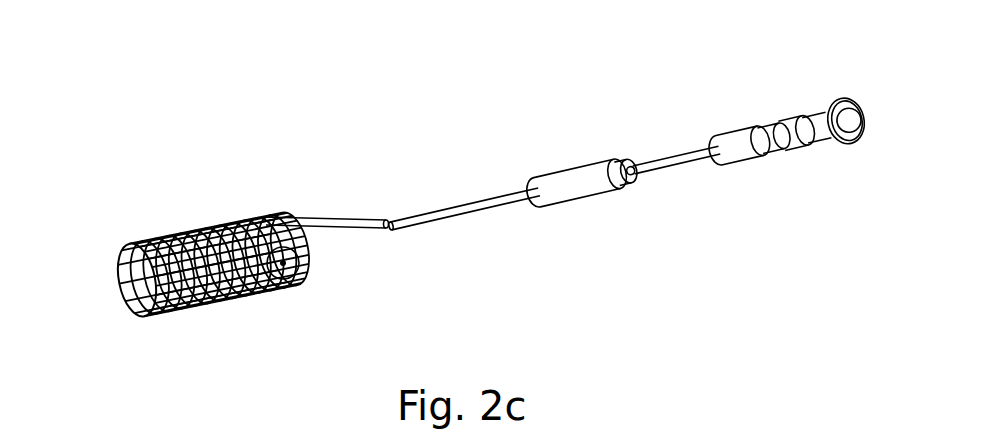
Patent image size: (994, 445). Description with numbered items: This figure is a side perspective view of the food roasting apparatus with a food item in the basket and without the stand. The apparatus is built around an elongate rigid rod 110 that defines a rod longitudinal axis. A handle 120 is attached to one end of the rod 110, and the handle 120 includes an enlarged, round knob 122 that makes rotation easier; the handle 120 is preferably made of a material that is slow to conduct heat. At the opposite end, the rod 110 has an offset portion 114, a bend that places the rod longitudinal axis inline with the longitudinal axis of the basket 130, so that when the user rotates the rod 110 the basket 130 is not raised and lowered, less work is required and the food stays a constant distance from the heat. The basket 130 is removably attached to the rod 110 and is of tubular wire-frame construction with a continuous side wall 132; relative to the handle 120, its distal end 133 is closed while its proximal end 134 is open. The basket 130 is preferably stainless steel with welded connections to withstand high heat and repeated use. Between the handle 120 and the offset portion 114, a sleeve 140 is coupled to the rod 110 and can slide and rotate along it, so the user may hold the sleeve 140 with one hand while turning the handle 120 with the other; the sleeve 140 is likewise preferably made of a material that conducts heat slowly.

The elongate rigid rod 110 is at (463, 200).
The offset portion 114 is at (338, 217).
The handle 120 is at (732, 128).
The round knob 122 is at (840, 98).
The basket 130 is at (171, 205).
The continuous side wall 132 is at (217, 303).
The distal end 133 is at (127, 277).
The proximal end 134 is at (310, 268).
The sleeve 140 is at (582, 162).